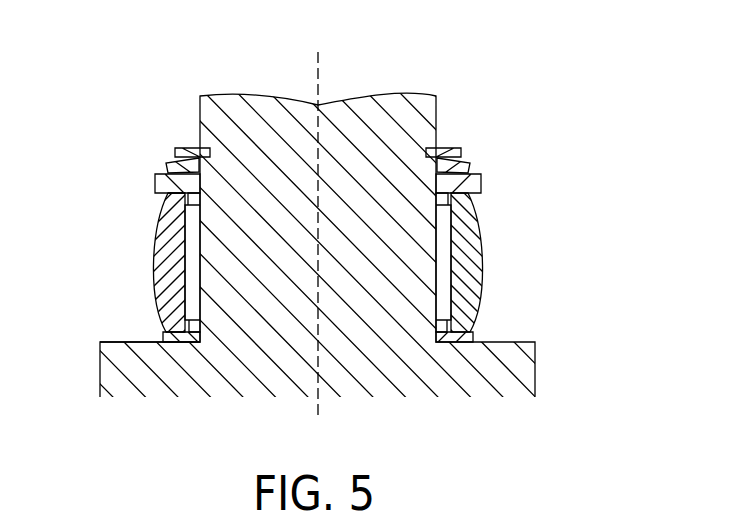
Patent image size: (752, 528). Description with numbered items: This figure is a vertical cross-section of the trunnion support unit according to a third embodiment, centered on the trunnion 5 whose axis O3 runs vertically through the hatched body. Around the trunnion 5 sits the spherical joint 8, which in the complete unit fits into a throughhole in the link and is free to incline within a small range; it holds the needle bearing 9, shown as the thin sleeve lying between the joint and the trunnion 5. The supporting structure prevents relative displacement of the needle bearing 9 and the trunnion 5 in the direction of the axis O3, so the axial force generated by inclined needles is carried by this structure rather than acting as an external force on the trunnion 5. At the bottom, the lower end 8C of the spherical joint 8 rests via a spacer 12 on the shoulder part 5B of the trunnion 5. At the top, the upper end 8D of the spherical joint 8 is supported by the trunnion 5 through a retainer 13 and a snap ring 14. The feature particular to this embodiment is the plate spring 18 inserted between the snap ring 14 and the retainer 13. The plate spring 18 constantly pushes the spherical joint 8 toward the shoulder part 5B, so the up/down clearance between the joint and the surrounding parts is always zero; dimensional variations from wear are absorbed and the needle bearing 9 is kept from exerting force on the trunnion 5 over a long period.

The trunnion 5 is at (263, 110).
The shoulder part 5B is at (127, 350).
The axis O3 is at (318, 92).
The snap ring 14 is at (188, 148).
The plate spring 18 is at (175, 166).
The retainer 13 is at (157, 184).
The needle bearing 9 is at (192, 237).
The spherical joint 8 is at (158, 250).
The upper end of the spherical joint 8D is at (180, 193).
The lower end of the spherical joint 8C is at (178, 338).
The spacer 12 is at (183, 343).